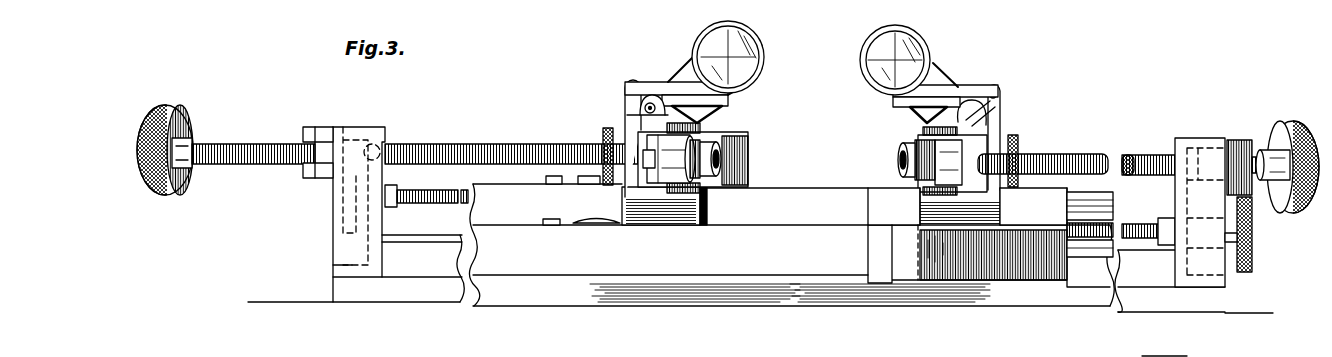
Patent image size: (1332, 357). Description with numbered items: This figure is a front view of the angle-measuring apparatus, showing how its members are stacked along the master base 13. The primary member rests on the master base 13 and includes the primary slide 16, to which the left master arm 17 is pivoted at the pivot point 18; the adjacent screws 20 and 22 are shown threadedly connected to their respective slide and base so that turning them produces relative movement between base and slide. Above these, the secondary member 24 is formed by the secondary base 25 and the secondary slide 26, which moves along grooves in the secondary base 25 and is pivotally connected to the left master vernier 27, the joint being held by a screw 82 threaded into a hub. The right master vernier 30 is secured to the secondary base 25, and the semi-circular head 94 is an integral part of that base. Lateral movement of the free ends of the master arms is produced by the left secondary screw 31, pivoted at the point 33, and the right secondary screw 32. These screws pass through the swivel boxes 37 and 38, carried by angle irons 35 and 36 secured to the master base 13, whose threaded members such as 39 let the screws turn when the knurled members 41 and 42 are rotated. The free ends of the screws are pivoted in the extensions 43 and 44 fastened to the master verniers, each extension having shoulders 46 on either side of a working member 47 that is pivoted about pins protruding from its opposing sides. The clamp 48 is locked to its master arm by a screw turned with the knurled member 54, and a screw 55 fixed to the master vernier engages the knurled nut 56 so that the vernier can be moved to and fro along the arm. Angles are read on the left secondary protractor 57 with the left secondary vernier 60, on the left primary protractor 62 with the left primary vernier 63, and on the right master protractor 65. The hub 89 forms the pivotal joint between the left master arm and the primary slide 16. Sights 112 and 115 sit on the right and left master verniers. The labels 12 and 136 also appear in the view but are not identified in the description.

The lathe 12 is at (1289, 350).
The master base 13 is at (790, 296).
The primary slide 16 is at (1098, 205).
The left master arm 17 is at (716, 189).
The pivot point 18 is at (903, 172).
The screw 20 is at (433, 201).
The screw 22 is at (1158, 226).
The secondary member 24 is at (485, 186).
The secondary base 25 is at (638, 256).
The secondary slide 26 is at (1093, 256).
The left master vernier 27 is at (681, 206).
The right master vernier 30 is at (920, 211).
The left secondary screw 31 is at (488, 146).
The right secondary screw 32 is at (1140, 156).
The pivot point 33 is at (341, 129).
The angle iron 35 is at (350, 246).
The angle iron 36 is at (1182, 155).
The swivel box 37 is at (312, 126).
The swivel box 38 is at (1238, 140).
The threaded member 39 is at (323, 158).
The knurled member 41 is at (190, 122).
The knurled member 42 is at (1291, 121).
The extension 43 is at (703, 128).
The extension 44 is at (922, 127).
The shoulder 46 is at (648, 166).
The working member 47 is at (663, 150).
The clamp 48 is at (628, 108).
The knurled member 54 is at (604, 130).
The screw 55 is at (653, 104).
The knurled nut 56 is at (650, 93).
The left secondary protractor 57 is at (546, 222).
The left secondary vernier 60 is at (585, 217).
The left primary protractor 62 is at (592, 175).
The left primary vernier 63 is at (553, 176).
The right master protractor 65 is at (1031, 175).
The screw 82 is at (418, 262).
The hub 89 is at (750, 146).
The semi-circular head 94 is at (1013, 266).
The sight 112 is at (916, 41).
The sight 115 is at (758, 40).
The base plate 136 is at (1180, 353).